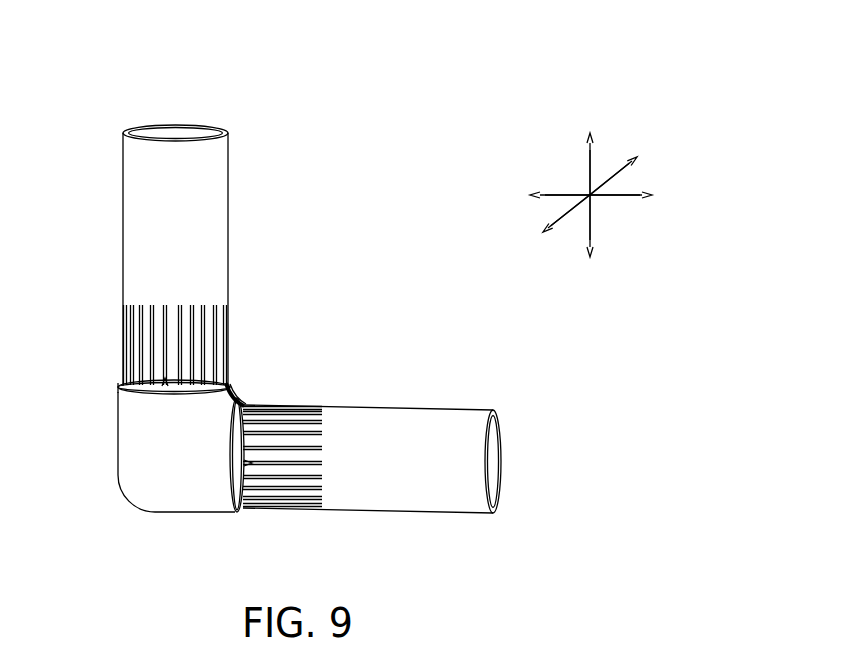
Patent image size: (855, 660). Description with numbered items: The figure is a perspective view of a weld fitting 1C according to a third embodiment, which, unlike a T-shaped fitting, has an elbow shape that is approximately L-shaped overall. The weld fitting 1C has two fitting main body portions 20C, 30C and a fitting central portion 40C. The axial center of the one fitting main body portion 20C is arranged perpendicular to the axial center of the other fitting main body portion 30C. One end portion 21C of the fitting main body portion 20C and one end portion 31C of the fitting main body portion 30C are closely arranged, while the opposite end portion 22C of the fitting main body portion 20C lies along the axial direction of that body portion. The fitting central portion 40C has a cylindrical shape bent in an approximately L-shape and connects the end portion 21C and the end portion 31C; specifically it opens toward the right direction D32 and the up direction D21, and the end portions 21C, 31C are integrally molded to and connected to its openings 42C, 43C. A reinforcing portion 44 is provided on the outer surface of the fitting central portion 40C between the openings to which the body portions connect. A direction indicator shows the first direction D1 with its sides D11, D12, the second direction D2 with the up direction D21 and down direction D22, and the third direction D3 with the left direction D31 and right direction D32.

The weld fitting 1C is at (312, 82).
The fitting main body portion 30C is at (213, 104).
The opening 43C is at (200, 383).
The end portion 31C is at (147, 389).
The fitting central portion 40C is at (161, 525).
The reinforcing portion 44 is at (233, 393).
The fitting main body portion 20C is at (409, 386).
The opening 42C is at (243, 440).
The end portion 21C is at (237, 493).
The end portion 22C is at (505, 465).
The first direction D1 is at (618, 177).
The first direction side D11 is at (546, 226).
The first direction other side D12 is at (635, 164).
The second direction D2 is at (590, 176).
The up direction D21 is at (588, 153).
The down direction D22 is at (588, 239).
The third direction D3 is at (618, 198).
The left direction D31 is at (538, 194).
The right direction D32 is at (643, 199).